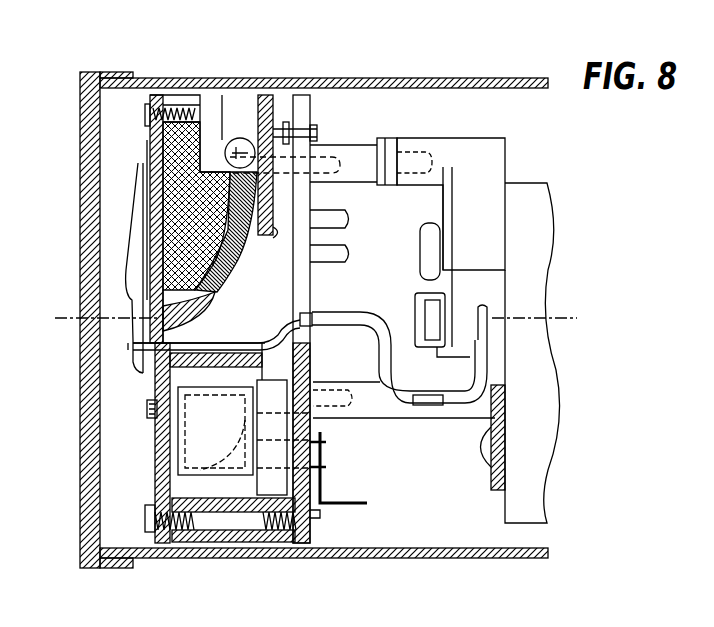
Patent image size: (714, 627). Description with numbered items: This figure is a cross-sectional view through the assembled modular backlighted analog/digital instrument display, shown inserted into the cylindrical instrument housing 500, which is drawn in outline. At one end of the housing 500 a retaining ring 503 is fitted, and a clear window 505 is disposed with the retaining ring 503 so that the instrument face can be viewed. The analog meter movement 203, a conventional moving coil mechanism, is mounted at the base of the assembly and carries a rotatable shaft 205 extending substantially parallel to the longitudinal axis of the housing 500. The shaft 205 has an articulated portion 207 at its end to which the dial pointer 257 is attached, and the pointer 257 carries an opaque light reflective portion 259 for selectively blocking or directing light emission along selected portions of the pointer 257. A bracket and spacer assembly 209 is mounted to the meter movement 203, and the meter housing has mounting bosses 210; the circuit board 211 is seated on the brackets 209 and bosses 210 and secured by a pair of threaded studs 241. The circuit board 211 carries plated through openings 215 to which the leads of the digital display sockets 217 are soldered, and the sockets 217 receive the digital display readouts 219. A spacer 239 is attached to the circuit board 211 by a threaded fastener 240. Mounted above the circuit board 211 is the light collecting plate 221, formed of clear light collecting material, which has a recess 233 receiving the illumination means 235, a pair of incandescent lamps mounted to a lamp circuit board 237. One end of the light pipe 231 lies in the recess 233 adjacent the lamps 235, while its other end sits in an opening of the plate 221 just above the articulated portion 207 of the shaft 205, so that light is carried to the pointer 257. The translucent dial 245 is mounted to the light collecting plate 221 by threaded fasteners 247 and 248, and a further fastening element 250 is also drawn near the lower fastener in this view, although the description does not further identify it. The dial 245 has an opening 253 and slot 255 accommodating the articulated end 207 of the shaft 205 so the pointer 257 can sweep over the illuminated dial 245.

The analog meter movement 203 is at (525, 517).
The rotatable shaft 205 is at (398, 419).
The articulated portion 207 is at (300, 322).
The bracket and spacer assembly 209 is at (495, 498).
The mounting bosses 210 is at (445, 138).
The circuit board 211 is at (303, 93).
The plated through openings 215 is at (318, 477).
The digital display sockets 217 is at (272, 490).
The digital display readouts 219 is at (232, 465).
The light collecting plate 221 is at (180, 93).
The light pipe 231 is at (212, 322).
The recess 233 is at (210, 150).
The illumination means 235 is at (238, 140).
The lamp circuit board 237 is at (266, 94).
The spacer 239 is at (190, 544).
The threaded fastener 240 is at (316, 513).
The threaded studs 241 is at (156, 466).
The dial 245 is at (152, 145).
The threaded fastener 247 is at (148, 412).
The threaded fastener 248 is at (146, 113).
The spring screw 250 is at (150, 511).
The opening 253 is at (143, 350).
The slot 255 is at (165, 365).
The dial pointer 257 is at (143, 283).
The opaque light reflective portion 259 is at (142, 205).
The instrument housing 500 is at (392, 559).
The retaining ring 503 is at (118, 568).
The clear window 505 is at (92, 466).